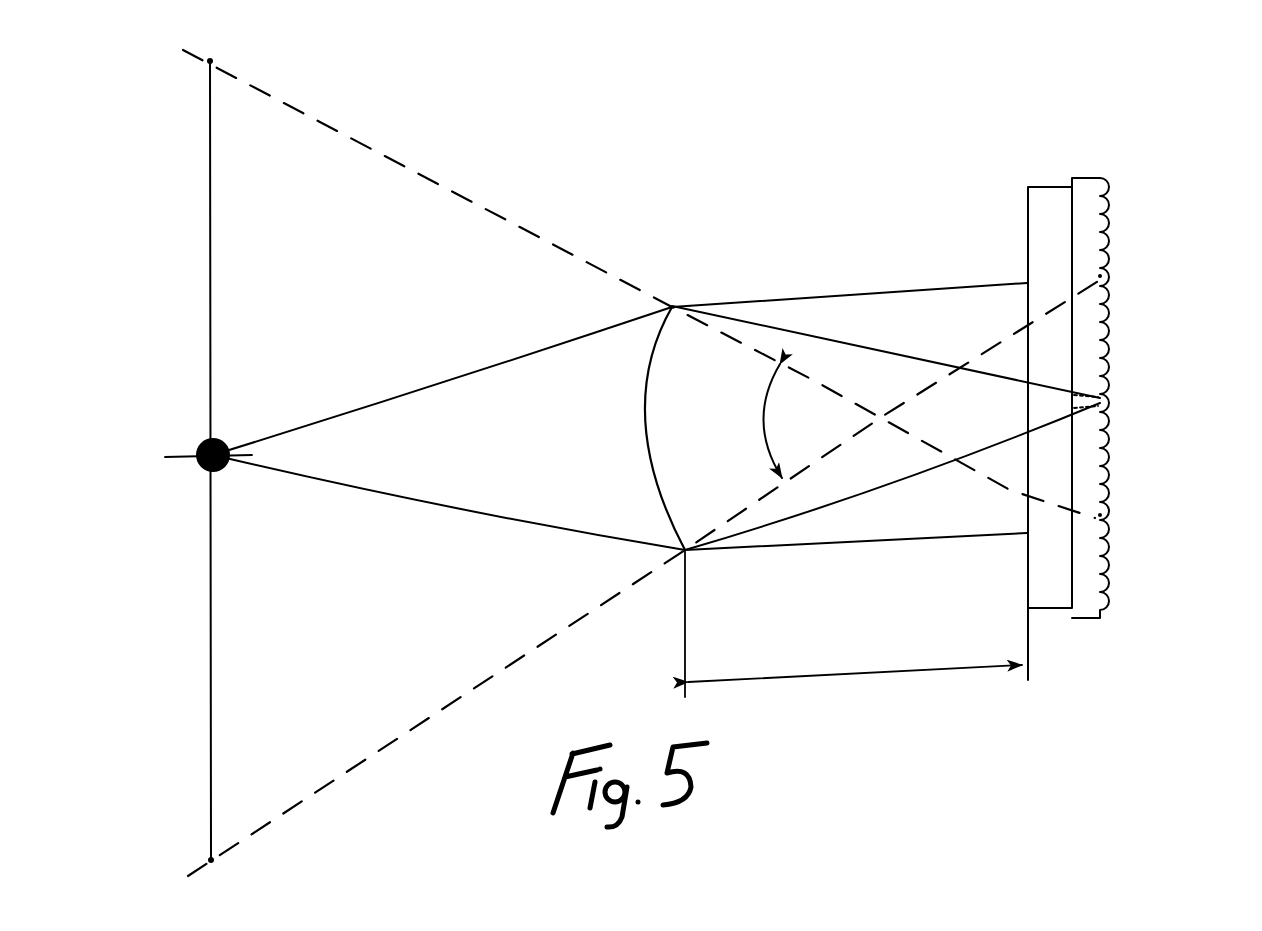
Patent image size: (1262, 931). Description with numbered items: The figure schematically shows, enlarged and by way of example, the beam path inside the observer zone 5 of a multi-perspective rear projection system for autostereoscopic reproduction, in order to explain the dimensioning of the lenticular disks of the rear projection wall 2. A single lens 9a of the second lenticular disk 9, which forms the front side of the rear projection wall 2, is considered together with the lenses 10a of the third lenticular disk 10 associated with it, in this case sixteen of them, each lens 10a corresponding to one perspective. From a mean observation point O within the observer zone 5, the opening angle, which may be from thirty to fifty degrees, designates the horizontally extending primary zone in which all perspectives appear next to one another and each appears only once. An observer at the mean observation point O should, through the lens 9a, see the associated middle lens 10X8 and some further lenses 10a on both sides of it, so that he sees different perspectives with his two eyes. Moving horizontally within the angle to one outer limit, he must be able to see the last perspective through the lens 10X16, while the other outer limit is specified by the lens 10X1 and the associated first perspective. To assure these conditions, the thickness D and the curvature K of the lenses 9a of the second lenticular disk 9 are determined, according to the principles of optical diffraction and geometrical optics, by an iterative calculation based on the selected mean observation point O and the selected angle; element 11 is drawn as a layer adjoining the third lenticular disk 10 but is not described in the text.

The rear projection wall 2 is at (1061, 653).
The observer zone 5 is at (427, 220).
The second lenticular disk 9 is at (756, 252).
The lens of the second lenticular disk 9a is at (888, 316).
The third lenticular disk 10 is at (1145, 351).
The lens of the third lenticular disk 10a is at (1106, 170).
The lens for the sixteenth perspective 10X16 is at (1106, 276).
The middle lens for the eighth perspective 10X8 is at (1103, 398).
The lens for the first perspective 10X1 is at (1106, 515).
The substrate / carrier plate 11 is at (1048, 212).
The curvature K is at (655, 515).
The mean observation point O is at (186, 480).
The thickness D is at (853, 623).